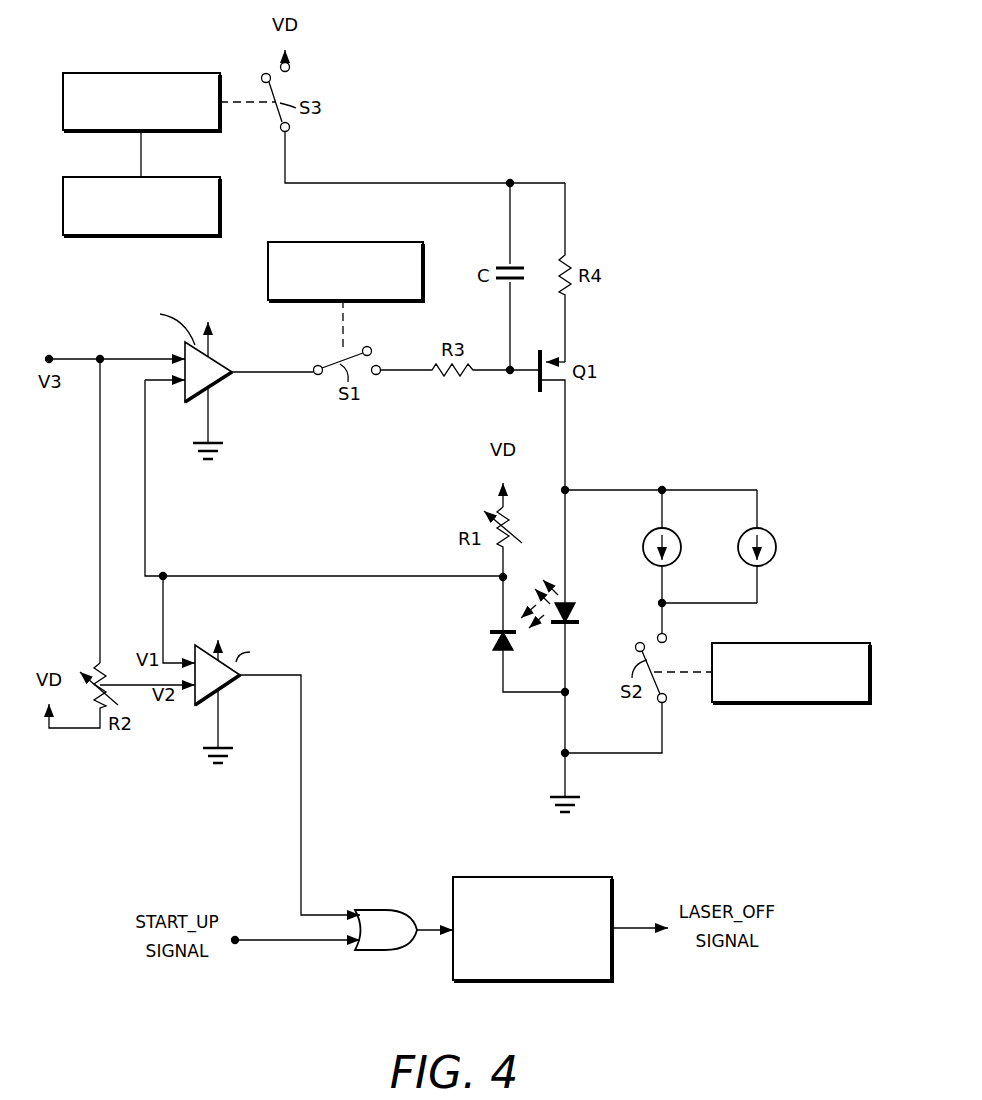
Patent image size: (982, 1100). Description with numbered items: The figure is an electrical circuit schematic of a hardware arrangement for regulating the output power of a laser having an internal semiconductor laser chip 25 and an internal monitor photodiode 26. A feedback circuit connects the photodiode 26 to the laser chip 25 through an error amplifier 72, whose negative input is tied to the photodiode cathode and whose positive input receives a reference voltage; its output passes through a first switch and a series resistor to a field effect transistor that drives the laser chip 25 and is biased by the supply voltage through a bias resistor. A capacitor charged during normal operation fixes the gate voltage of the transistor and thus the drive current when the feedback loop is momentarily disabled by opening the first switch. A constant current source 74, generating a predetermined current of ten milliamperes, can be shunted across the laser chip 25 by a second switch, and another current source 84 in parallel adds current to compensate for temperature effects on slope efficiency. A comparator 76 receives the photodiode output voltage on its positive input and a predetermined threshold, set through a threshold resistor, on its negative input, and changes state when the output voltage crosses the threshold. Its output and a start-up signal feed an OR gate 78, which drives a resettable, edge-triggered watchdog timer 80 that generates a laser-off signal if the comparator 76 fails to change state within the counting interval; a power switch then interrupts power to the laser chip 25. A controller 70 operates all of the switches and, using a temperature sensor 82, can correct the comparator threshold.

The controller 70 is at (205, 74).
The temperature sensor 82 is at (205, 177).
The error amplifier 72 is at (216, 393).
The comparator 76 is at (236, 692).
The constant current source 74 is at (648, 535).
The current source 84 is at (770, 534).
The laser chip 25 is at (576, 610).
The monitor photodiode 26 is at (495, 659).
The OR gate 78 is at (389, 908).
The watchdog timer 80 is at (596, 877).